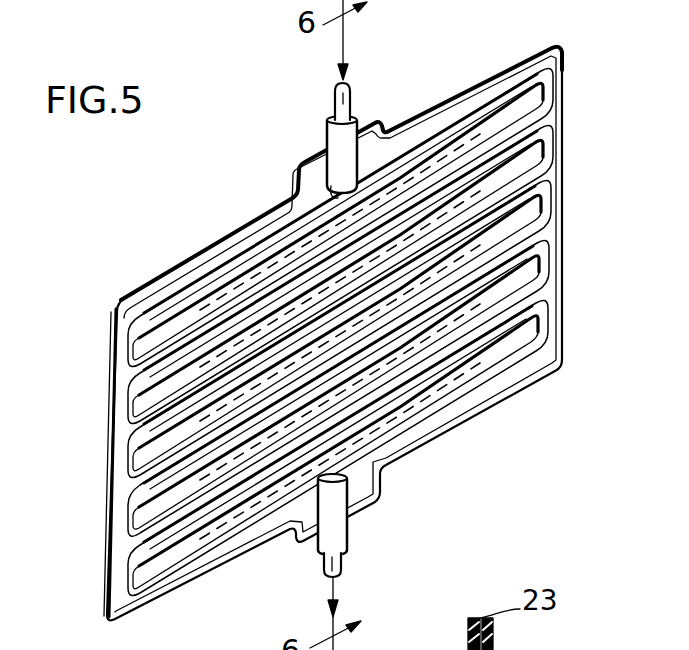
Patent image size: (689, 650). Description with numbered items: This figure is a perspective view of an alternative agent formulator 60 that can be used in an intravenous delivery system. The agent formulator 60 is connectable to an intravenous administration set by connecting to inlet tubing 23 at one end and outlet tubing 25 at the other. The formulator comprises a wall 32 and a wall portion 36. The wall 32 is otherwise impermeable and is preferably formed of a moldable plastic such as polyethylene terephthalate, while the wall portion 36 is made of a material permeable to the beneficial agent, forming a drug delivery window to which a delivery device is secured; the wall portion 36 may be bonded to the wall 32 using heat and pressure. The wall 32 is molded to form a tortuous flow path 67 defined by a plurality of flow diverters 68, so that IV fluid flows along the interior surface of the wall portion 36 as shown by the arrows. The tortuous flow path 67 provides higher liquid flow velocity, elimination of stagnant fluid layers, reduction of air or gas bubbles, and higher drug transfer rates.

The agent formulator 60 is at (582, 91).
The wall 32 is at (552, 177).
The wall portion 36 is at (140, 288).
The inlet tubing 23 is at (348, 92).
The outlet tubing 25 is at (342, 572).
The tortuous flow path 67 is at (530, 230).
The flow diverters 68 is at (157, 423).